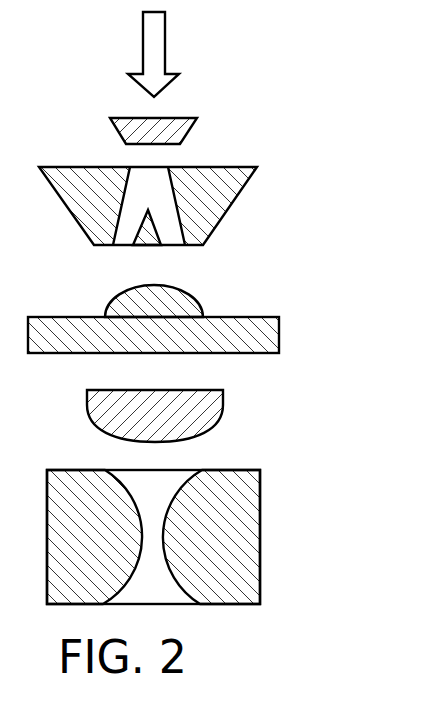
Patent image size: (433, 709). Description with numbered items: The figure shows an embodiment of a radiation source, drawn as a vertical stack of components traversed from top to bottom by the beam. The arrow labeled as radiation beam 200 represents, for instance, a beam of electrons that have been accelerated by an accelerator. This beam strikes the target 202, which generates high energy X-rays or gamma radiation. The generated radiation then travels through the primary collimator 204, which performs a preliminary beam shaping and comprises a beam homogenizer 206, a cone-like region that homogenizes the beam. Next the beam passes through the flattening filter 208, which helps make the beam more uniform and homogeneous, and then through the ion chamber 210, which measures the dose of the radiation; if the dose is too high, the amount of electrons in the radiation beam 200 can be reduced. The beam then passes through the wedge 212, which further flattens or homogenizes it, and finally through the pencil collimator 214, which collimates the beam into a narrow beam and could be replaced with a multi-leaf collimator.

The radiation beam 200 is at (165, 23).
The target 202 is at (178, 133).
The primary collimator 204 is at (237, 198).
The beam homogenizer 206 is at (150, 237).
The flattening filter 208 is at (184, 302).
The ion chamber 210 is at (267, 347).
The wedge 212 is at (207, 412).
The pencil collimator 214 is at (245, 552).